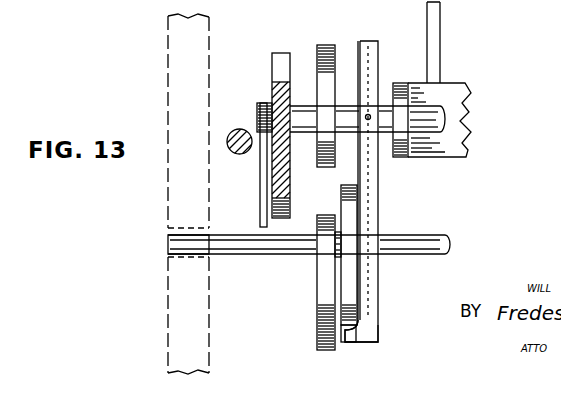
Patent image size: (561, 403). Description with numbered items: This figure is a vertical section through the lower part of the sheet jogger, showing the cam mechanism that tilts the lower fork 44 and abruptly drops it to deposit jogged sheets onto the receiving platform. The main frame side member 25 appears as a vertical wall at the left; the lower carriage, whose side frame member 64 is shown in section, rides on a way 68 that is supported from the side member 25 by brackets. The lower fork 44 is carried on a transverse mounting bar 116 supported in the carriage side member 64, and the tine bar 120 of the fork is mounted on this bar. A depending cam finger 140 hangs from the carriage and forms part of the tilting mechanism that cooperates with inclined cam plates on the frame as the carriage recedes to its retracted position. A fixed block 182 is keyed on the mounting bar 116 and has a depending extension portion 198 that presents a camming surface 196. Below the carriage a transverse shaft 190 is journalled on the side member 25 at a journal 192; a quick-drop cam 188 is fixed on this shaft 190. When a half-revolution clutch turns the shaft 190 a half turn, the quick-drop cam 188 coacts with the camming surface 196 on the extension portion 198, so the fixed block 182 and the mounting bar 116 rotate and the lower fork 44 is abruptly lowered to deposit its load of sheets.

The side member 25 is at (168, 322).
The lower fork 44 is at (441, 40).
The side frame member 64 is at (278, 92).
The way 68 is at (240, 154).
The transverse mounting bar 116 is at (444, 113).
The tine bar 120 is at (455, 93).
The depending cam finger 140 is at (260, 214).
The fixed block 182 is at (367, 40).
The quick-drop cam 188 is at (341, 197).
The transverse shaft 190 is at (418, 233).
The journal 192 is at (175, 257).
The camming surface 196 is at (380, 335).
The depending extension portion 198 is at (352, 343).